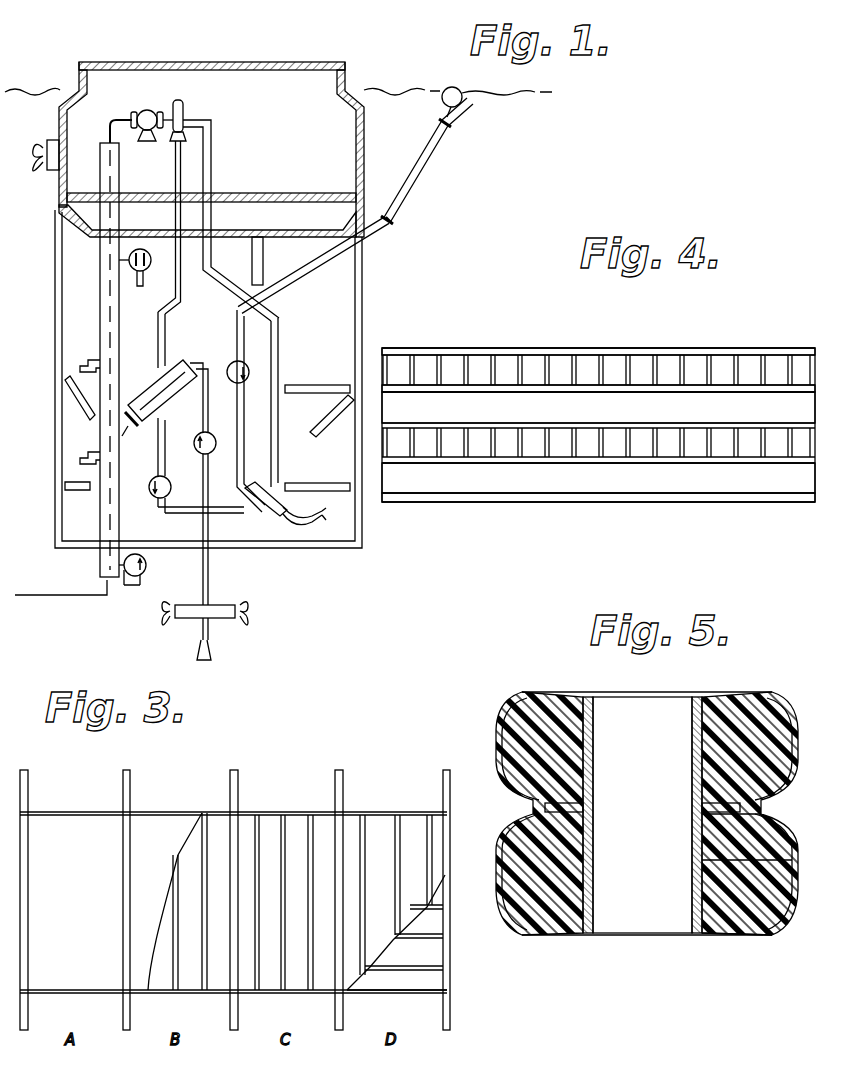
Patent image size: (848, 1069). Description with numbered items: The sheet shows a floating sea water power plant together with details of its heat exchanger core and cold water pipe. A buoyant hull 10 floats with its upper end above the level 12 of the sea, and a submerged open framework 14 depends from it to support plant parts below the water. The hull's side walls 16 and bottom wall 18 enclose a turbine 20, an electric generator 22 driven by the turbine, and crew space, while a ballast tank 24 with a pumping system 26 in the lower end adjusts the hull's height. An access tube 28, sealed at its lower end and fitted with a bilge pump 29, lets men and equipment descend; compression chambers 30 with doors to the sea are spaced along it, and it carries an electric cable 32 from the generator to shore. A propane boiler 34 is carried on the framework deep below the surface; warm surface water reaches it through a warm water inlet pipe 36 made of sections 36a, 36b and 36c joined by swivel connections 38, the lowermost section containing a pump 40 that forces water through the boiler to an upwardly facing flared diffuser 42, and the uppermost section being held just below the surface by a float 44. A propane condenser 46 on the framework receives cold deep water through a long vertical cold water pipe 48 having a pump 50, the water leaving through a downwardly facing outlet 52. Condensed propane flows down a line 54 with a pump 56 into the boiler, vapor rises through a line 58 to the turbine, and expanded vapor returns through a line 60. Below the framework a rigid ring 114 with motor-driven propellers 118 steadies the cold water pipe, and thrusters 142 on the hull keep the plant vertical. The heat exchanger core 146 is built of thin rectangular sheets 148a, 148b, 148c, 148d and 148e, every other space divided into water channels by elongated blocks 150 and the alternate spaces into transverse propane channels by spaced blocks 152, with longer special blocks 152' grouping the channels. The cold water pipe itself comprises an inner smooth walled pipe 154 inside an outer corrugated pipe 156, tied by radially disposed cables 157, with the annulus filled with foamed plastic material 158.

In FIG. 1, the buoyant hull 10 is at (366, 91).
In FIG. 1, the sea level 12 is at (45, 92).
In FIG. 1, the submerged open framework 14 is at (366, 320).
In FIG. 1, the side walls 16 is at (59, 113).
In FIG. 1, the bottom wall 18 is at (290, 240).
In FIG. 1, the turbine 20 is at (184, 104).
In FIG. 1, the electric generator 22 is at (150, 112).
In FIG. 1, the ballast tank 24 is at (286, 221).
In FIG. 1, the pumping system 26 is at (148, 272).
In FIG. 1, the access tube 28 is at (102, 312).
In FIG. 1, the bilge pump 29 is at (148, 581).
In FIG. 1, the compression chambers 30 is at (86, 362).
In FIG. 1, the electric cable 32 is at (124, 120).
In FIG. 1, the propane boiler 34 is at (262, 518).
In FIG. 1, the warm water inlet pipe 36 is at (422, 188).
In FIG. 1, the lowermost pipe section 36a is at (378, 250).
In FIG. 1, the intermediate pipe section 36b is at (400, 218).
In FIG. 1, the uppermost pipe section 36c is at (462, 118).
In FIG. 1, the swivel connections 38 is at (450, 130).
In FIG. 1, the pump 40 is at (255, 360).
In FIG. 1, the flared diffuser 42 is at (313, 519).
In FIG. 1, the float 44 is at (458, 92).
In FIG. 1, the propane condenser 46 is at (175, 366).
In FIG. 1, the cold water pipe 48 is at (210, 588).
In FIG. 5, the cold water pipe 48 is at (772, 798).
In FIG. 1, the pump 50 is at (210, 436).
In FIG. 1, the outlet 52 is at (132, 430).
In FIG. 1, the condensed propane line 54 is at (195, 398).
In FIG. 1, the pump 56 is at (166, 481).
In FIG. 1, the propane vapor line 58 is at (212, 176).
In FIG. 1, the return line 60 is at (166, 325).
In FIG. 1, the rigid ring 114 is at (224, 622).
In FIG. 1, the motor-driven propellers 118 is at (242, 619).
In FIG. 1, the motor-driven propellers 142 is at (49, 170).
In FIG. 4, the heat exchanger core 146 is at (458, 326).
In FIG. 3, the heat exchanger core 146 is at (462, 834).
In FIG. 4, the rectangular sheet 148a is at (808, 348).
In FIG. 3, the rectangular sheet 148a is at (140, 901).
In FIG. 4, the rectangular sheet 148b is at (792, 398).
In FIG. 3, the rectangular sheet 148b is at (447, 982).
In FIG. 4, the rectangular sheet 148c is at (720, 413).
In FIG. 4, the rectangular sheet 148d is at (765, 468).
In FIG. 4, the rectangular sheet 148e is at (800, 502).
In FIG. 4, the elongated parallel blocks 150 is at (472, 413).
In FIG. 3, the elongated parallel blocks 150 is at (440, 948).
In FIG. 4, the spaced blocks 152 is at (596, 388).
In FIG. 3, the spaced blocks 152 is at (293, 921).
In FIG. 4, the special blocks 152' is at (597, 411).
In FIG. 3, the special blocks 152' is at (235, 900).
In FIG. 5, the inner smooth walled pipe 154 is at (690, 686).
In FIG. 5, the outer corrugated pipe 156 is at (790, 712).
In FIG. 5, the radially disposed cables 157 is at (700, 796).
In FIG. 5, the foamed plastic material 158 is at (722, 884).